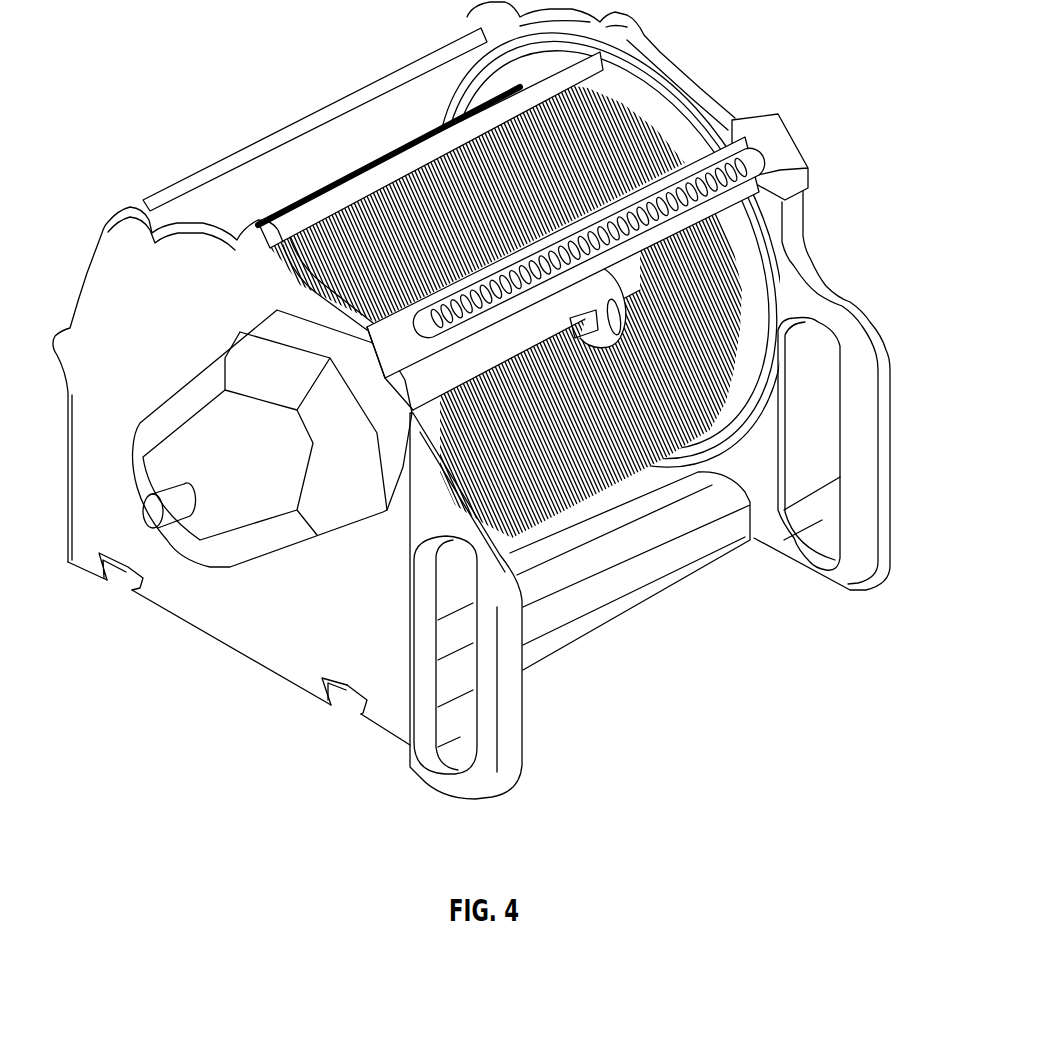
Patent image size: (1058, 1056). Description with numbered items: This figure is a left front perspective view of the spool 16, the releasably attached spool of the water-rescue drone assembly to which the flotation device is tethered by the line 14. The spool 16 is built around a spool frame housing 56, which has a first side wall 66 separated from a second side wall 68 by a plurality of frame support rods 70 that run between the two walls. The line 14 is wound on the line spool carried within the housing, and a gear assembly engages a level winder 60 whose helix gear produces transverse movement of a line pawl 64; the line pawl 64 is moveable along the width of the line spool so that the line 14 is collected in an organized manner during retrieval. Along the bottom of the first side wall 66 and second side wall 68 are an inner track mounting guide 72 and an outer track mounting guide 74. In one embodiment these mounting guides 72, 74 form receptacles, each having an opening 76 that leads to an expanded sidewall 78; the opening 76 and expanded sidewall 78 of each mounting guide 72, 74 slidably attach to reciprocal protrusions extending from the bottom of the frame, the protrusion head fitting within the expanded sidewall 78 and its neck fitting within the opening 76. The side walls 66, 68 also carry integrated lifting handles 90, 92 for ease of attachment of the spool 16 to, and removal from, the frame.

The line 14 is at (300, 282).
The spool 16 is at (843, 72).
The spool frame housing 56 is at (198, 628).
The level winder 60 is at (775, 145).
The line pawl 64 is at (705, 228).
The first side wall 66 is at (710, 84).
The second side wall 68 is at (68, 442).
The frame support rods 70 is at (260, 142).
The inner track mounting guide 72 is at (123, 598).
The outer track mounting guide 74 is at (308, 742).
The opening 76 is at (344, 708).
The expanded sidewall 78 is at (318, 690).
The lifting handle 90 is at (845, 468).
The lifting handle 92 is at (492, 694).